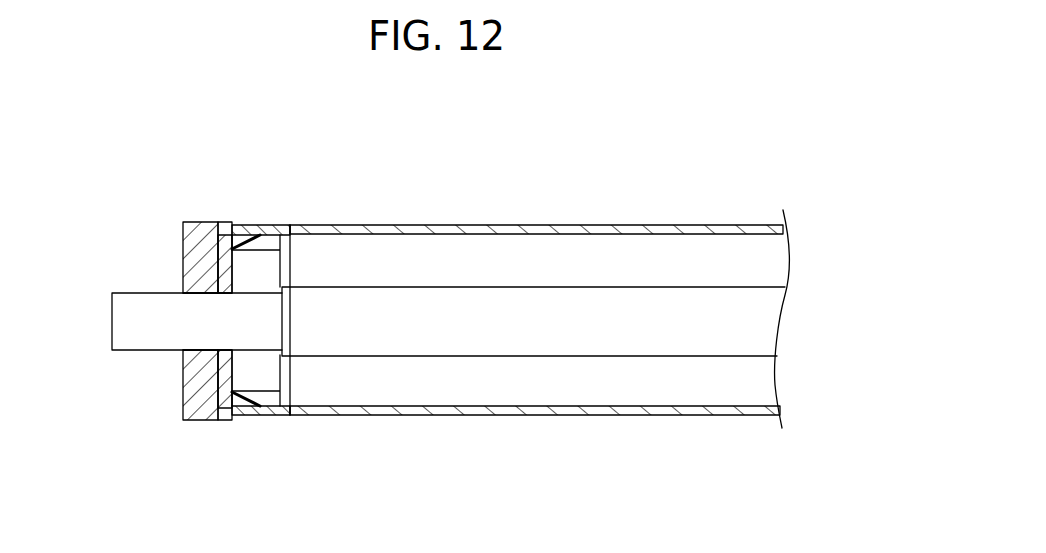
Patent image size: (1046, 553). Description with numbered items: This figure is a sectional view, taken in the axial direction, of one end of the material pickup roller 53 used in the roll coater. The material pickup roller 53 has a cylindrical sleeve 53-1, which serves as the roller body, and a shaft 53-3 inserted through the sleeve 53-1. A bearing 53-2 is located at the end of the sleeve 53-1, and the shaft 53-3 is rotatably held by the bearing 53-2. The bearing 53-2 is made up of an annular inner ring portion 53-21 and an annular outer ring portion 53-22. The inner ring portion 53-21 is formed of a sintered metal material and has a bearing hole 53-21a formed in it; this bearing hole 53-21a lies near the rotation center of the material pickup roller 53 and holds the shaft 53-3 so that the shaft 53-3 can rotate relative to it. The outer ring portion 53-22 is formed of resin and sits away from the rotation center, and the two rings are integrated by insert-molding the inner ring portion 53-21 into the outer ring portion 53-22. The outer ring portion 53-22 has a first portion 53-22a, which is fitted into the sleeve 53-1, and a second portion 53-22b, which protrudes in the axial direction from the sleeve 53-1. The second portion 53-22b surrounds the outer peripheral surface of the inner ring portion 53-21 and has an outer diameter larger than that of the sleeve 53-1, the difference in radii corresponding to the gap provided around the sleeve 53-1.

The material pickup roller 53 is at (538, 158).
The cylindrical sleeve 53-1 is at (650, 409).
The bearing 53-2 is at (270, 473).
The shaft 53-3 is at (600, 313).
The inner ring portion 53-21 is at (187, 400).
The bearing hole 53-21a is at (200, 346).
The outer ring portion 53-22 is at (358, 150).
The first portion 53-22a is at (262, 227).
The second portion 53-22b is at (203, 224).